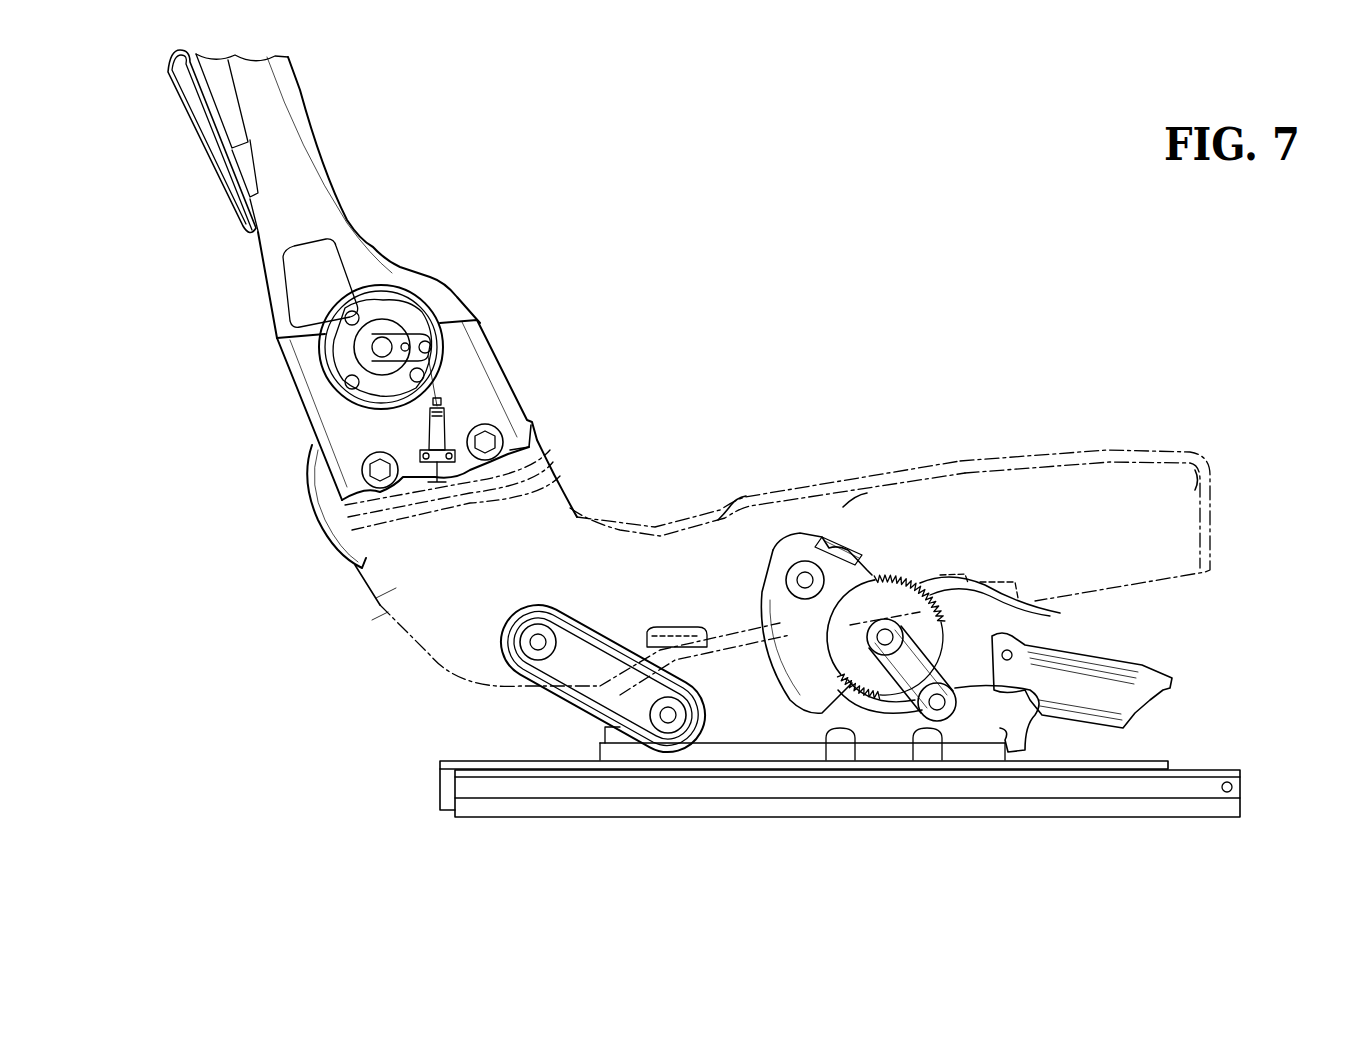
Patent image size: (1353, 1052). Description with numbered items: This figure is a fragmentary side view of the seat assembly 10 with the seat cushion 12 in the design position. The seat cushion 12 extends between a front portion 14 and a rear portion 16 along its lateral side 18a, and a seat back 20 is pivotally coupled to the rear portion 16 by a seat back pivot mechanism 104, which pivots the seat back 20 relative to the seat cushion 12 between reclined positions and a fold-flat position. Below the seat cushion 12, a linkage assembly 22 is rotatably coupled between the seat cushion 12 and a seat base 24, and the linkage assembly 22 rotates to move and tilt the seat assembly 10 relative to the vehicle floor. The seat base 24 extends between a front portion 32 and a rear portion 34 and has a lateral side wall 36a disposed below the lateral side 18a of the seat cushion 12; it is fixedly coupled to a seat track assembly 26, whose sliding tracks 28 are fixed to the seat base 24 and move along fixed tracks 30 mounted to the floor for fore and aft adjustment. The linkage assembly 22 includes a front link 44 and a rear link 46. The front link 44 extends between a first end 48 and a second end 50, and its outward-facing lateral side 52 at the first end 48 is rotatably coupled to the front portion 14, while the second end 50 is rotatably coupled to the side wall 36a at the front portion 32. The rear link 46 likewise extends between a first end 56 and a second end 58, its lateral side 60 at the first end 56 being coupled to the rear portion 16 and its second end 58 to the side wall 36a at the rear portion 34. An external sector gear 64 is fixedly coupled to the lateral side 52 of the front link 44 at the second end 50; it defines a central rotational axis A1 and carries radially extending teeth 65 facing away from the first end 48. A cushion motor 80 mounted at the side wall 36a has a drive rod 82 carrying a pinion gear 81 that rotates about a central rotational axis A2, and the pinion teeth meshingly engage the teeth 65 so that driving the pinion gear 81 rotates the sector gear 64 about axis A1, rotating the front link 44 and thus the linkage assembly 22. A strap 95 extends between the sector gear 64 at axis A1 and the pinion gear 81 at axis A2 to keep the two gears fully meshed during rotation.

The seat assembly 10 is at (720, 208).
The seat cushion 12 is at (1100, 468).
The front portion 14 is at (1200, 470).
The rear portion 16 is at (385, 597).
The lateral side 18a is at (1082, 515).
The seat back 20 is at (318, 150).
The linkage assembly 22 is at (702, 605).
The seat base 24 is at (736, 772).
The seat track assembly 26 is at (877, 822).
The sliding tracks 28 is at (440, 802).
The fixed tracks 30 is at (490, 808).
The front portion 32 is at (1040, 750).
The rear portion 34 is at (590, 740).
The lateral side wall 36a is at (802, 734).
The front link 44 is at (880, 545).
The rear link 46 is at (608, 620).
The first end 48 is at (785, 600).
The second end 50 is at (845, 710).
The lateral side 52 is at (845, 612).
The first end 56 is at (538, 625).
The second end 58 is at (668, 735).
The lateral side 60 is at (585, 680).
The sector gear 64 is at (935, 585).
The teeth 65 is at (1000, 600).
The cushion motor 80 is at (1190, 670).
The pinion gear 81 is at (960, 712).
The drive rod 82 is at (925, 700).
The strap 95 is at (900, 680).
The seat back pivot mechanism 104 is at (405, 295).
The central rotational axis A1 is at (800, 648).
The central rotational axis A2 is at (1033, 686).